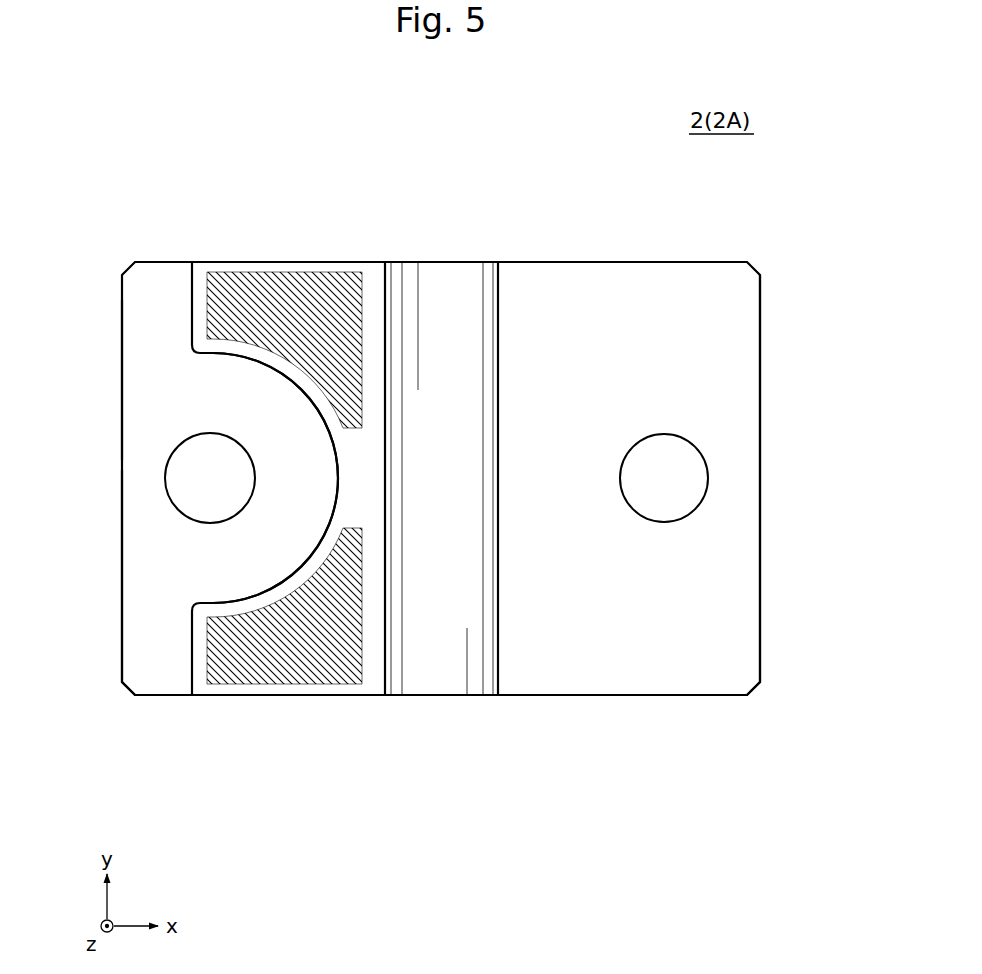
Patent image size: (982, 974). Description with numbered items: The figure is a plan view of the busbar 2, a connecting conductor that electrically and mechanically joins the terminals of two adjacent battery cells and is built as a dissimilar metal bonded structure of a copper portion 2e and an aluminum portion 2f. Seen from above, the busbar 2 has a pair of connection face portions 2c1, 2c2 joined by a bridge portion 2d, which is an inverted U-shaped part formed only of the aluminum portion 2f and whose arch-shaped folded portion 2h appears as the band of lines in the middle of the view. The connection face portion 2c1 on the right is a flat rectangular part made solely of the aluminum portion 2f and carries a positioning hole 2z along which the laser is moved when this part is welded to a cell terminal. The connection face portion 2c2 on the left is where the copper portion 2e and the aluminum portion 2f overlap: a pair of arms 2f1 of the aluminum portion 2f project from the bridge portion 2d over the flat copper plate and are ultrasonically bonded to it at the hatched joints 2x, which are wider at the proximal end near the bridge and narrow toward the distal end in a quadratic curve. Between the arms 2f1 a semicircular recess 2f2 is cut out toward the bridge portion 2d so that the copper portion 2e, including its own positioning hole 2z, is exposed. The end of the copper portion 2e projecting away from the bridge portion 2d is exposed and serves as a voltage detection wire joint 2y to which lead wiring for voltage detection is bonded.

The busbar 2 is at (441, 478).
The copper portion 2e is at (151, 260).
The pair of arms 2f1 is at (195, 275).
The joint 2x is at (310, 290).
The folded portion 2h is at (446, 312).
The bridge portion 2d is at (468, 260).
The aluminum portion 2f is at (624, 260).
The voltage detection wire joint 2y is at (152, 380).
The positioning hole 2z is at (212, 437).
The recess 2f2 is at (303, 562).
The connection face portion 2c2 is at (186, 582).
The connection face portion 2c1 is at (672, 666).